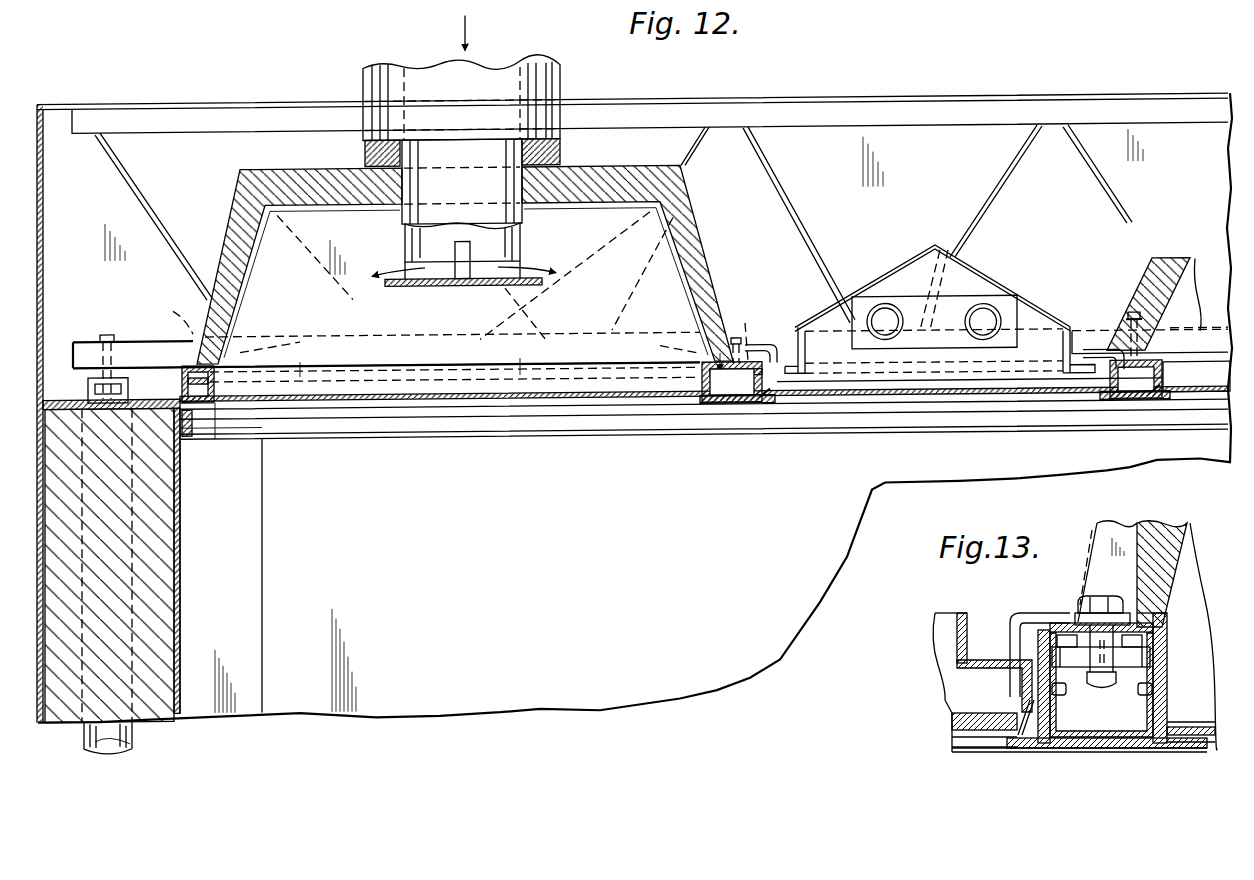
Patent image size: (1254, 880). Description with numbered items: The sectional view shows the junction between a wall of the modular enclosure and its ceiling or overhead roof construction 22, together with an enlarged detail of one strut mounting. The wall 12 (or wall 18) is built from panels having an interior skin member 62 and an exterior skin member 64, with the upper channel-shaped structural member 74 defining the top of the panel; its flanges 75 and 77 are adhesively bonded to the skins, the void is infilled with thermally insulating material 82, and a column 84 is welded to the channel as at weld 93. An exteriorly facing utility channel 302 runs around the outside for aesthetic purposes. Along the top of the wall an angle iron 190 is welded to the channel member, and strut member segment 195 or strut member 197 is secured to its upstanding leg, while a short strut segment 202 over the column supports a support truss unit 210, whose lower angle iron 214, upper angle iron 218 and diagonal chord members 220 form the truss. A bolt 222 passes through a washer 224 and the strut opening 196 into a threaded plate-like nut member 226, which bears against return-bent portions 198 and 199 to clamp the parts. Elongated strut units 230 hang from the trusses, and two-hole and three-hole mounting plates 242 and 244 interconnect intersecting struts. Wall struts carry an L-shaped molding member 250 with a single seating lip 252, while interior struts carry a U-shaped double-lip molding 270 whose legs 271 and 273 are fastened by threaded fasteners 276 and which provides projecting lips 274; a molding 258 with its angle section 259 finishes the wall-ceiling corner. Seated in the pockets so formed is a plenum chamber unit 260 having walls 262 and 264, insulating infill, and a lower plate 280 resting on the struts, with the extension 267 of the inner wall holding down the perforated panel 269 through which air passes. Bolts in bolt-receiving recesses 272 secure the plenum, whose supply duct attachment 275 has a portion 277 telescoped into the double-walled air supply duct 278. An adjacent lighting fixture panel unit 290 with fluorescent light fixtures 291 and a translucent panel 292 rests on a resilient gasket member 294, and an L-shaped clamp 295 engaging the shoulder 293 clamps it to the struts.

In FIG. 12, the wall 12 is at (378, 728).
In FIG. 12, the wall 18 is at (41, 725).
In FIG. 12, the ceiling or overhead roof construction 22 is at (941, 96).
In FIG. 12, the interior skin member 62 is at (184, 562).
In FIG. 12, the exterior skin member 64 is at (48, 545).
In FIG. 12, the upper channel-shaped structural member 74 is at (80, 405).
In FIG. 12, the flange of upper channel member 75 is at (46, 430).
In FIG. 12, the flange of upper channel member 77 is at (178, 454).
In FIG. 12, the thermally insulating material 82 is at (550, 155).
In FIG. 13, the thermally insulating material 82 is at (1168, 535).
In FIG. 12, the column 84 is at (99, 748).
In FIG. 12, the weld 93 is at (143, 415).
In FIG. 12, the angle iron 190 is at (165, 411).
In FIG. 12, the strut member segment 195 is at (1212, 405).
In FIG. 13, the longitudinally extending opening 196 is at (1080, 628).
In FIG. 12, the strut member 197 is at (177, 356).
In FIG. 13, the return-bent portion 198 is at (1068, 672).
In FIG. 13, the return-bent portion 199 is at (1123, 673).
In FIG. 12, the short channel-shaped strut segment 202 is at (118, 416).
In FIG. 12, the support truss unit 210 is at (192, 102).
In FIG. 12, the lower angle iron 214 is at (88, 347).
In FIG. 12, the upper angle iron 218 is at (164, 127).
In FIG. 12, the diagonal chord member 220 is at (144, 202).
In FIG. 12, the bolt 222 is at (107, 334).
In FIG. 13, the bolt 222 is at (1108, 597).
In FIG. 12, the washer 224 is at (102, 337).
In FIG. 12, the threaded plate-like nut member 226 is at (112, 384).
In FIG. 13, the threaded plate-like nut member 226 is at (1143, 657).
In FIG. 12, the elongated strut unit 230 is at (700, 394).
In FIG. 13, the elongated strut unit 230 is at (1077, 740).
In FIG. 12, the two-hole mounting plate 242 is at (275, 352).
In FIG. 12, the three-hole mounting plate 244 is at (667, 350).
In FIG. 12, the L-shaped molding member 250 is at (222, 426).
In FIG. 12, the seating flange or projecting lip 252 is at (307, 410).
In FIG. 12, the molding 258 is at (483, 449).
In FIG. 12, the angle section 259 is at (188, 426).
In FIG. 12, the plenum chamber unit 260 is at (697, 244).
In FIG. 12, the outer wall of plenum chamber 262 is at (262, 222).
In FIG. 13, the outer wall of plenum chamber 262 is at (1203, 557).
In FIG. 12, the inner wall of plenum chamber 264 is at (229, 235).
In FIG. 13, the inner wall of plenum chamber 264 is at (1137, 530).
In FIG. 12, the extension of inner wall 267 is at (460, 385).
In FIG. 13, the extension of inner wall 267 is at (1157, 694).
In FIG. 12, the perforated panel 269 is at (378, 406).
In FIG. 13, the perforated panel 269 is at (1195, 726).
In FIG. 12, the double seating lip molding 270 is at (746, 416).
In FIG. 13, the double seating lip molding 270 is at (1102, 752).
In FIG. 13, the leg of molding 271 is at (1012, 638).
In FIG. 12, the bolt-receiving recess 272 is at (460, 329).
In FIG. 13, the bolt-receiving recess 272 is at (1105, 542).
In FIG. 13, the leg of molding 273 is at (1162, 668).
In FIG. 12, the flanged seating portion or projecting lip 274 is at (700, 421).
In FIG. 13, the flanged seating portion or projecting lip 274 is at (1010, 752).
In FIG. 12, the supply duct attachment 275 is at (510, 236).
In FIG. 13, the threaded fastener 276 is at (1052, 695).
In FIG. 12, the exterior portion of supply duct 277 is at (437, 198).
In FIG. 12, the air supply duct 278 is at (425, 82).
In FIG. 12, the lower plate or wall member 280 is at (265, 340).
In FIG. 13, the lower plate or wall member 280 is at (1163, 614).
In FIG. 12, the lighting fixture panel unit 290 is at (940, 302).
In FIG. 13, the lighting fixture panel unit 290 is at (932, 637).
In FIG. 12, the fluorescent light fixture 291 is at (900, 325).
In FIG. 12, the translucent panel 292 is at (982, 400).
In FIG. 13, the translucent panel 292 is at (958, 723).
In FIG. 12, the peripherally extending shoulder 293 is at (812, 378).
In FIG. 13, the peripherally extending shoulder 293 is at (1006, 668).
In FIG. 12, the gasket member 294 is at (762, 418).
In FIG. 13, the gasket member 294 is at (1033, 750).
In FIG. 12, the L-shaped clamp 295 is at (756, 360).
In FIG. 13, the L-shaped clamp 295 is at (1035, 618).
In FIG. 12, the exteriorly facing utility channel 302 is at (45, 212).